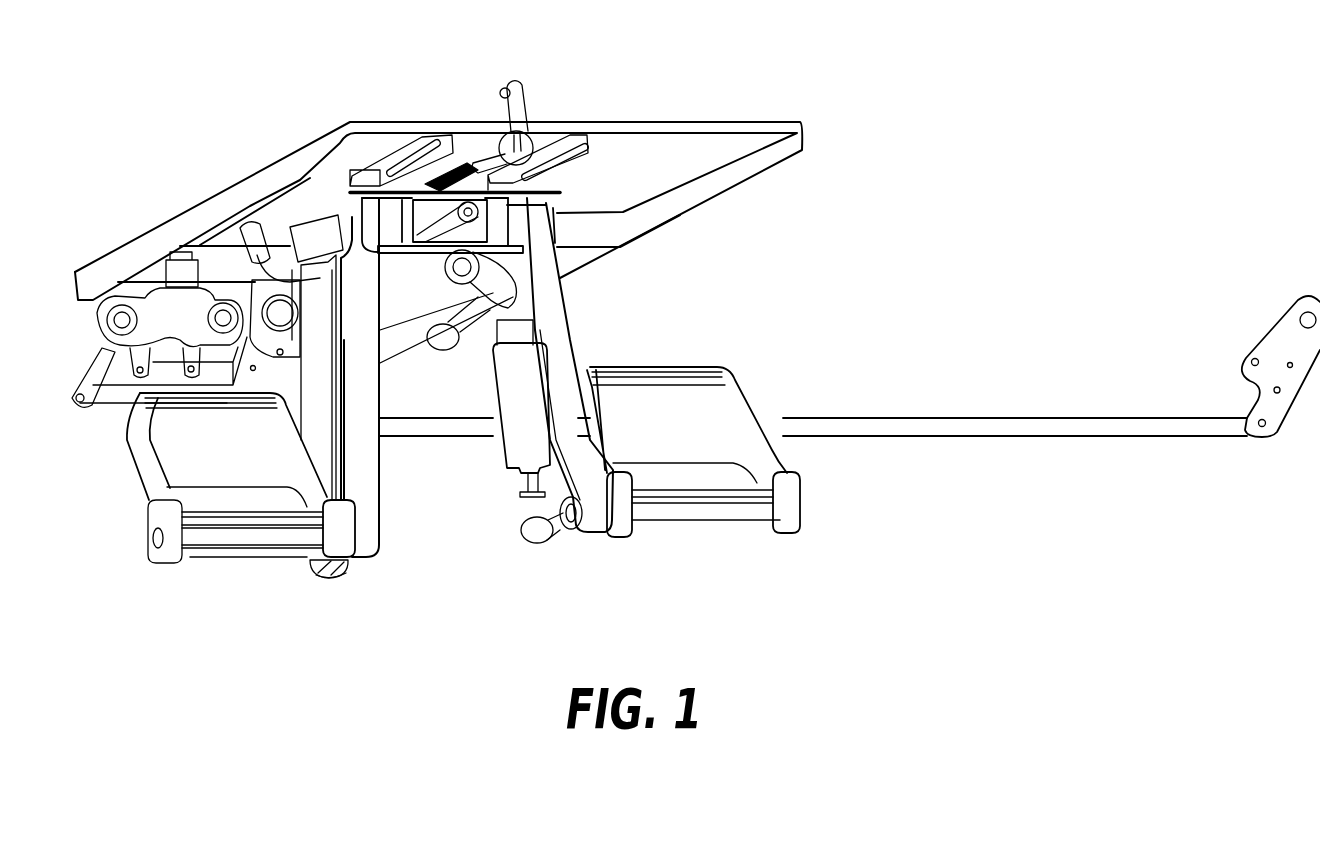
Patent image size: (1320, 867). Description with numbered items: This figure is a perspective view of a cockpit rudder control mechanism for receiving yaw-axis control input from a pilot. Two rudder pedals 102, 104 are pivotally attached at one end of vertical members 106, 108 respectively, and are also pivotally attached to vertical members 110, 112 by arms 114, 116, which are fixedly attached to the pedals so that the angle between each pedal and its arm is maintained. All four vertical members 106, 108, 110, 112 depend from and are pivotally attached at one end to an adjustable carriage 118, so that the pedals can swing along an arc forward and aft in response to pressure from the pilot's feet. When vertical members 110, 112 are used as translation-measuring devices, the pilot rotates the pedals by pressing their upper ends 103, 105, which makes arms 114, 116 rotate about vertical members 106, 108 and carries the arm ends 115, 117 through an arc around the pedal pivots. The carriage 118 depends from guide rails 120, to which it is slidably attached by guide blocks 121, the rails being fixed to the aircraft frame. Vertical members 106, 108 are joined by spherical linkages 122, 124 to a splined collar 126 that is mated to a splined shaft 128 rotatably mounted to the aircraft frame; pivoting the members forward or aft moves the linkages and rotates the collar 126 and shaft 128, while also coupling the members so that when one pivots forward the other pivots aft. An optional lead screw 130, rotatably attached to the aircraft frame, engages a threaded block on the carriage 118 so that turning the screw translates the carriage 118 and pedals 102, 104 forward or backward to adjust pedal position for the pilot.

The rudder pedal 102 is at (737, 407).
The upper end of rudder pedal 103 is at (700, 363).
The rudder pedal 104 is at (142, 480).
The upper end of rudder pedal 105 is at (180, 407).
The vertical member 106 is at (563, 360).
The vertical member 108 is at (363, 480).
The vertical member 110 is at (503, 447).
The vertical member 112 is at (333, 413).
The arm 114 is at (560, 527).
The end of arm 115 is at (537, 560).
The arm 116 is at (313, 563).
The end of arm 117 is at (328, 572).
The adjustable carriage 118 is at (317, 220).
The guide rail 120 is at (437, 150).
The guide block 121 is at (361, 190).
The spherical linkage 122 is at (477, 290).
The spherical linkage 124 is at (377, 283).
The splined collar 126 is at (430, 270).
The splined shaft 128 is at (473, 210).
The lead screw 130 is at (463, 170).